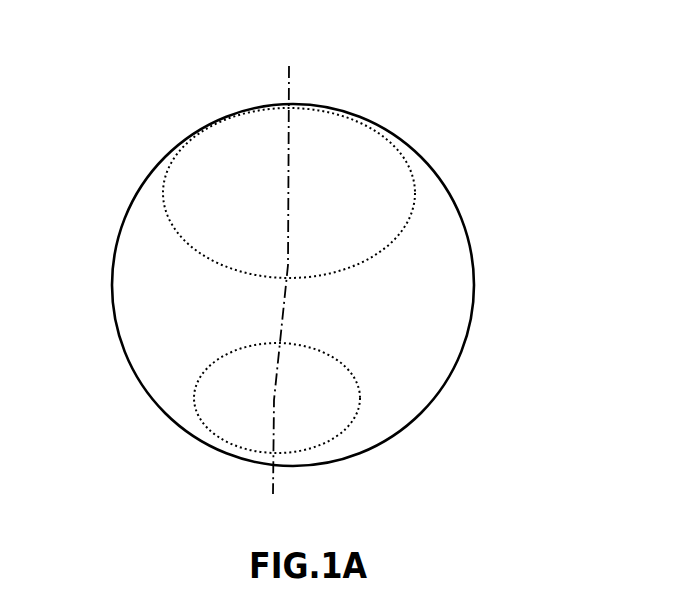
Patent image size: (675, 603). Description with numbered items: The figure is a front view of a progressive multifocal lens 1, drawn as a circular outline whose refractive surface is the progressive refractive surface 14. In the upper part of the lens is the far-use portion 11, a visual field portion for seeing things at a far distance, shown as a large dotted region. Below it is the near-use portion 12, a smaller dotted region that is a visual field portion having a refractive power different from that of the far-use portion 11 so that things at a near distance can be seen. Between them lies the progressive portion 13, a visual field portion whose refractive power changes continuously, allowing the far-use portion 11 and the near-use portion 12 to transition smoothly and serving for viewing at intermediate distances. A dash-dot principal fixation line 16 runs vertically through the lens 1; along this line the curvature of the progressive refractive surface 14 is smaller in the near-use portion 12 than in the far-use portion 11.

The progressive multifocal lens 1 is at (543, 190).
The far-use portion 11 is at (333, 130).
The near-use portion 12 is at (292, 405).
The progressive portion 13 is at (288, 316).
The progressive refractive surface 14 is at (145, 325).
The principal fixation line 16 is at (288, 73).